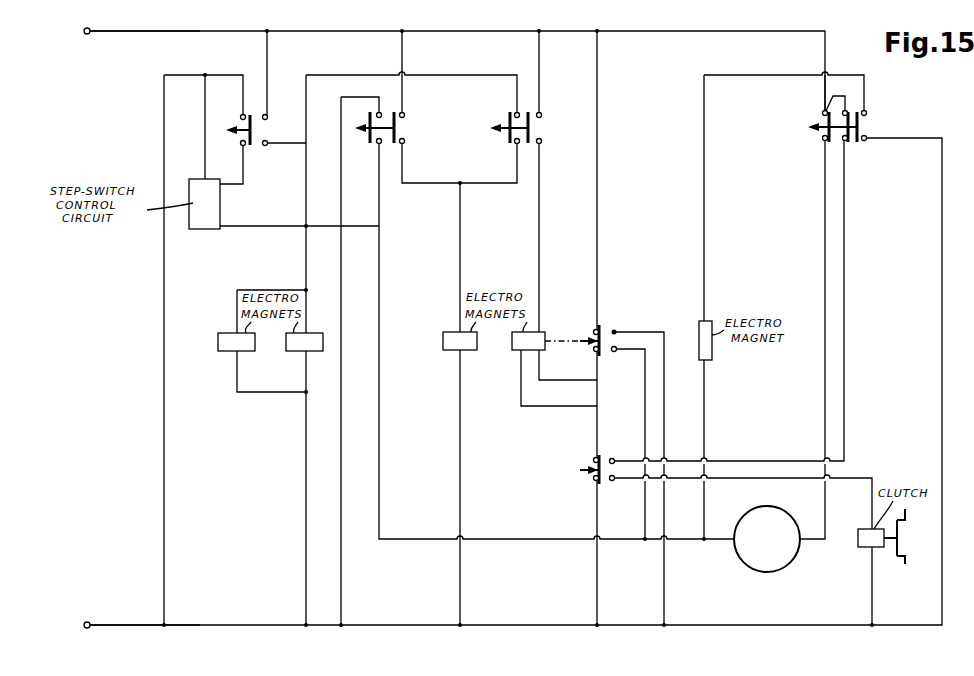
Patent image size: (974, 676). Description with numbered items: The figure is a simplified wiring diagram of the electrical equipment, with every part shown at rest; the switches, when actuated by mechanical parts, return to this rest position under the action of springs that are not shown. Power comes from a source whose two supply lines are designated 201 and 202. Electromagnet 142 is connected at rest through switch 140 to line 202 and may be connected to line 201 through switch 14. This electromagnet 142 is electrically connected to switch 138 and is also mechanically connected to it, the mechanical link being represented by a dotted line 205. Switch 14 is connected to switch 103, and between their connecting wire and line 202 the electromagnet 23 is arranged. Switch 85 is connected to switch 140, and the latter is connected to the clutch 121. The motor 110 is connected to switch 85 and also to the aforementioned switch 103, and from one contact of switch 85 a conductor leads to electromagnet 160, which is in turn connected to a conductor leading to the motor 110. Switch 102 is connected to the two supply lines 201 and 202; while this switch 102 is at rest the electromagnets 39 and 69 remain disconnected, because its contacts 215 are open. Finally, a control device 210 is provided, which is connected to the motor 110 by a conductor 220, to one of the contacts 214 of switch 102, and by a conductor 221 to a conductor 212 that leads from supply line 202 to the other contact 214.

The supply line 201 is at (121, 32).
The supply line 202 is at (128, 625).
The conductor 212 is at (164, 243).
The control device 210 is at (204, 218).
The conductor 220 is at (250, 227).
The conductor 221 is at (205, 153).
The contacts 214 is at (228, 131).
The contacts 215 is at (265, 141).
The switch 102 is at (253, 143).
The switch 103 is at (367, 132).
The switch 14 is at (505, 132).
The switch 85 is at (824, 130).
The electromagnet 39 is at (232, 350).
The electromagnet 69 is at (300, 350).
The electromagnet 23 is at (456, 350).
The electromagnet 142 is at (515, 350).
The dotted line 205 is at (565, 343).
The switch 138 is at (602, 350).
The switch 140 is at (588, 472).
The electromagnet 160 is at (713, 351).
The motor 110 is at (767, 539).
The clutch 121 is at (866, 548).